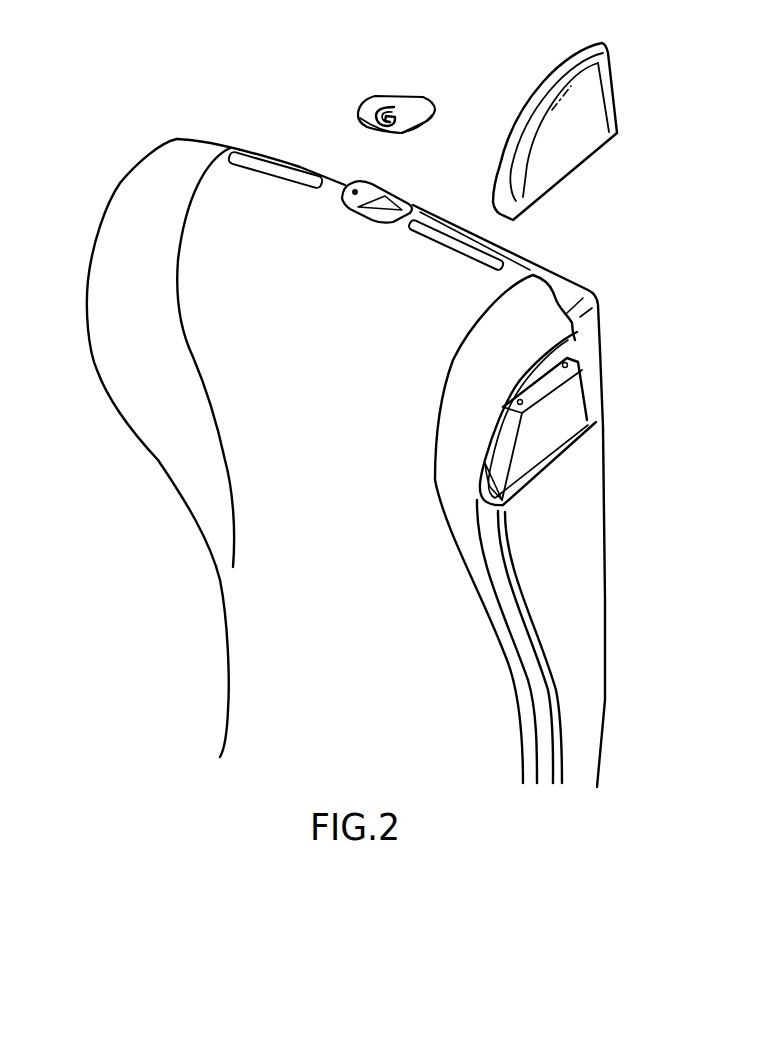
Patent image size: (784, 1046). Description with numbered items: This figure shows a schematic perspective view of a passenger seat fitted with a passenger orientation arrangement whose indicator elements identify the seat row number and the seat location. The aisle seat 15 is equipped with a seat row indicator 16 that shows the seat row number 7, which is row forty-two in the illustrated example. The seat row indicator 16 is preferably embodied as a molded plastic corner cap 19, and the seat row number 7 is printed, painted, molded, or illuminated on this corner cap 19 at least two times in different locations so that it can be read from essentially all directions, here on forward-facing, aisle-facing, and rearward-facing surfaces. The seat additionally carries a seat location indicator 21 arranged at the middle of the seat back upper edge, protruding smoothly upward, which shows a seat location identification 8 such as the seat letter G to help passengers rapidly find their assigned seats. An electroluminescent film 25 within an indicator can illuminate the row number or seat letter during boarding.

The aisle seat 15 is at (183, 113).
The seat row indicator 16 is at (630, 44).
The corner cap 19 is at (598, 103).
The seat row number 7 is at (590, 141).
The seat location indicator 21 is at (368, 108).
The seat location identification 8 is at (393, 108).
The electroluminescent film 25 is at (380, 205).